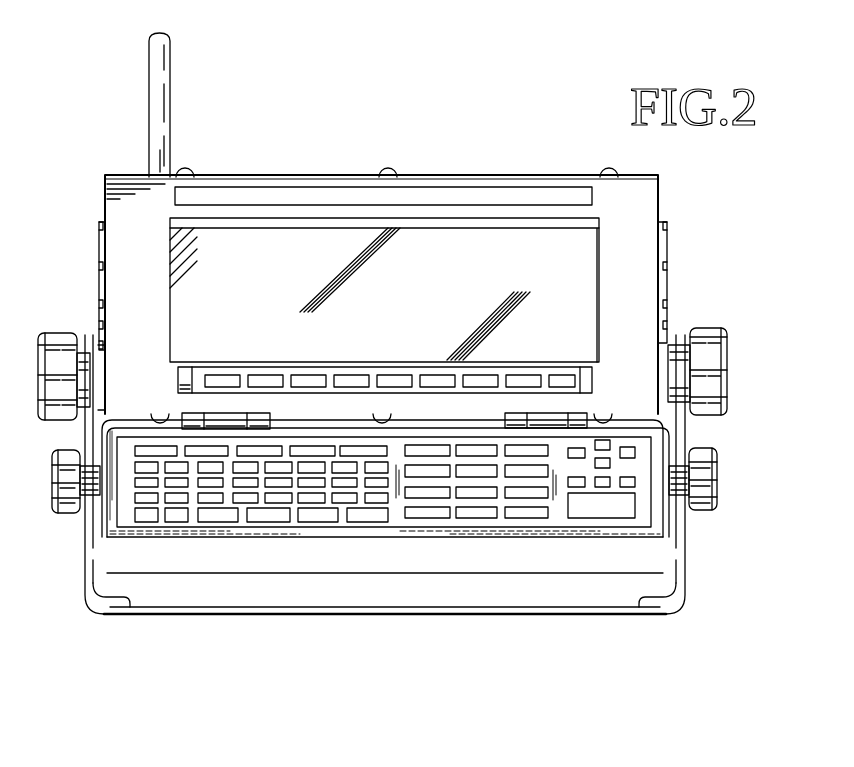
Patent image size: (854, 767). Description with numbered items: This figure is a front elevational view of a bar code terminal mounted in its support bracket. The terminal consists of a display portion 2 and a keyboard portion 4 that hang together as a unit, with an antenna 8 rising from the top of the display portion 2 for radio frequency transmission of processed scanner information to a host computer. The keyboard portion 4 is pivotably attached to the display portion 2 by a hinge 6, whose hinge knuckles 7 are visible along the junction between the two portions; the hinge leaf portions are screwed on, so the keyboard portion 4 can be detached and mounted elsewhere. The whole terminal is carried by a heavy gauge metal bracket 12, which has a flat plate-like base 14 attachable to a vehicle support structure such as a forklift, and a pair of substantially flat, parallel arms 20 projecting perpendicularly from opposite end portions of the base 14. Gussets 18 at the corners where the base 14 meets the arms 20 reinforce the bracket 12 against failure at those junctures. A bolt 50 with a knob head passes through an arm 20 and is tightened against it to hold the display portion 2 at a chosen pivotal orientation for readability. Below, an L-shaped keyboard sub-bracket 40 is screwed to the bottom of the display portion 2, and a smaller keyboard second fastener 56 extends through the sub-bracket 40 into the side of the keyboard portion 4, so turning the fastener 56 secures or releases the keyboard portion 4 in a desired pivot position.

The display portion 2 is at (650, 207).
The keyboard portion 4 is at (400, 440).
The hinge 6 is at (505, 413).
The hinge knuckles 7 is at (221, 421).
The antenna 8 is at (171, 107).
The bracket 12 is at (696, 571).
The base 14 is at (340, 617).
The gussets 18 is at (104, 594).
The arms 20 is at (685, 534).
The keyboard sub-bracket 40 is at (686, 440).
The bolt 50 is at (727, 356).
The keyboard second fastener 56 is at (718, 478).